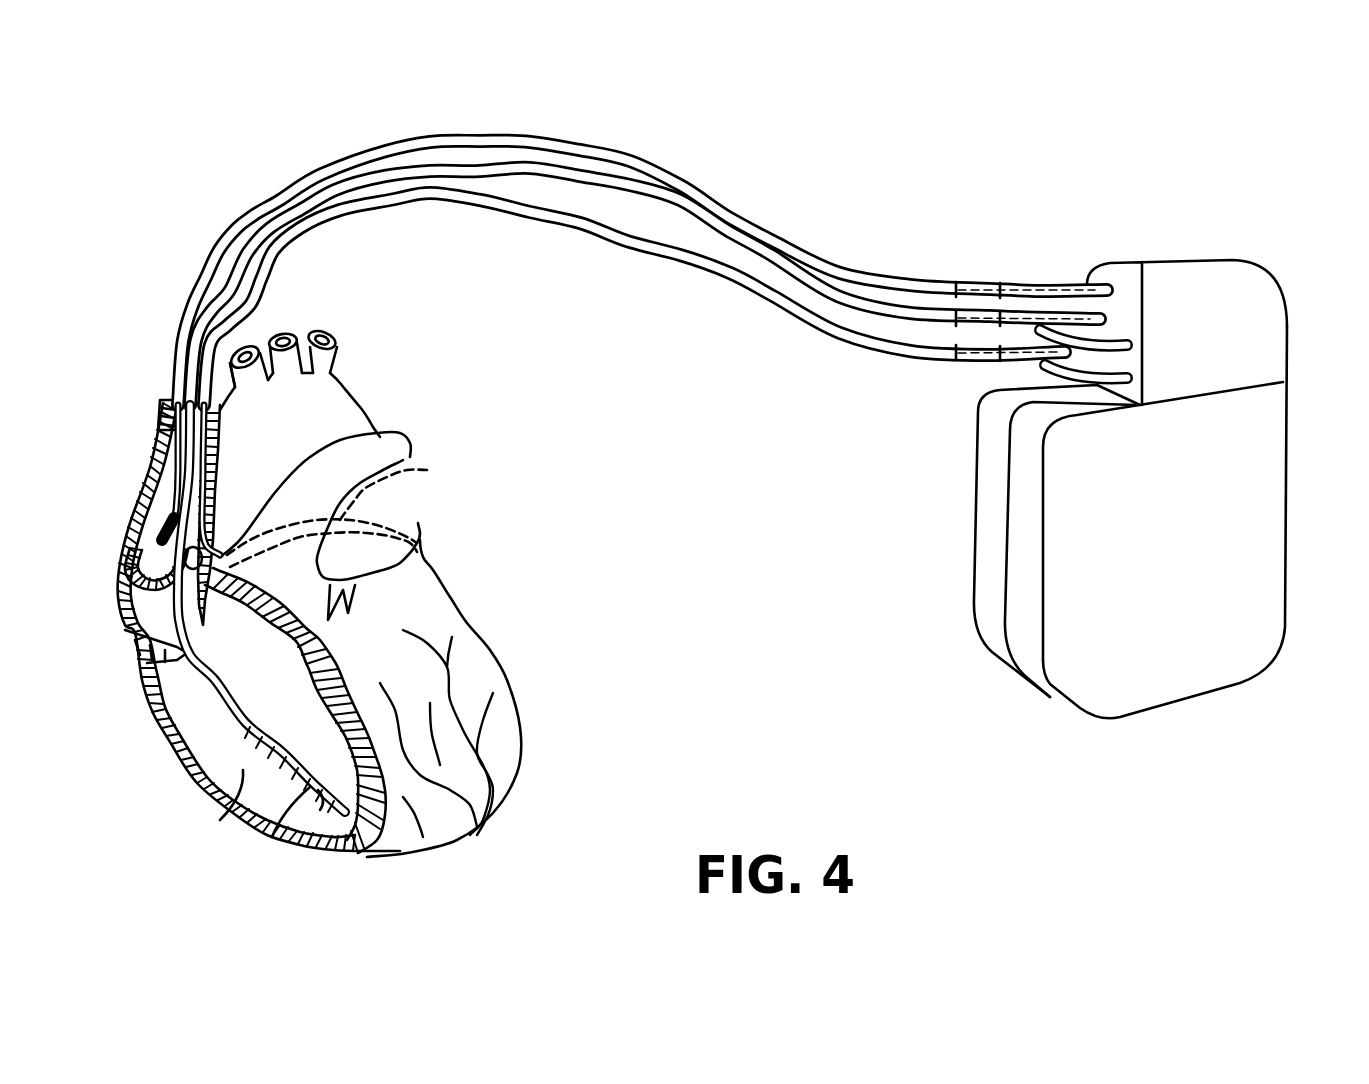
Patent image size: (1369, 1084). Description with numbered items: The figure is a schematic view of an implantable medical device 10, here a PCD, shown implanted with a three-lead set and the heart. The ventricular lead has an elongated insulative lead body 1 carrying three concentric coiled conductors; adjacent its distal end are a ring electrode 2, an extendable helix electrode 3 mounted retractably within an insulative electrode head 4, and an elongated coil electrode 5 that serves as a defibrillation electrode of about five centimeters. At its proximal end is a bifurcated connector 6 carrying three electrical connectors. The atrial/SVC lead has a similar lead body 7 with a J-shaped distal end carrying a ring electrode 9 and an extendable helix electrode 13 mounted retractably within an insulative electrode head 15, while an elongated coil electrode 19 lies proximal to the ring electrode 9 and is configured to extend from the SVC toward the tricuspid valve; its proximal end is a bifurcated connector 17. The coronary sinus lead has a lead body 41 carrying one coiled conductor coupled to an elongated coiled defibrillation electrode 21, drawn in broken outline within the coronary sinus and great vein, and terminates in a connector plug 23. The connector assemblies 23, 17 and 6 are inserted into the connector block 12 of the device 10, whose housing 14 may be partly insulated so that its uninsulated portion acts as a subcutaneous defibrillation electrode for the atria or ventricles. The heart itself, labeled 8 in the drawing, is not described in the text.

The lead body 1 is at (850, 330).
The ring electrode 2 is at (272, 837).
The extendable helix electrode 3 is at (366, 845).
The insulative electrode head 4 is at (313, 810).
The elongated coil electrode 5 is at (219, 808).
The bifurcated connector 6 is at (1020, 350).
The lead body 7 is at (888, 308).
The heart 8 is at (450, 817).
The ring electrode 9 is at (157, 565).
The implantable medical device 10 is at (1139, 480).
The connector block 12 is at (1197, 277).
The extendable helix electrode 13 is at (203, 527).
The housing 14 is at (1063, 665).
The insulative electrode head 15 is at (183, 527).
The bifurcated connector 17 is at (1063, 327).
The elongated coil electrode 19 is at (160, 441).
The elongated coiled defibrillation electrode 21 is at (427, 470).
The connector plug 23 is at (1020, 293).
The lead body 41 is at (817, 268).